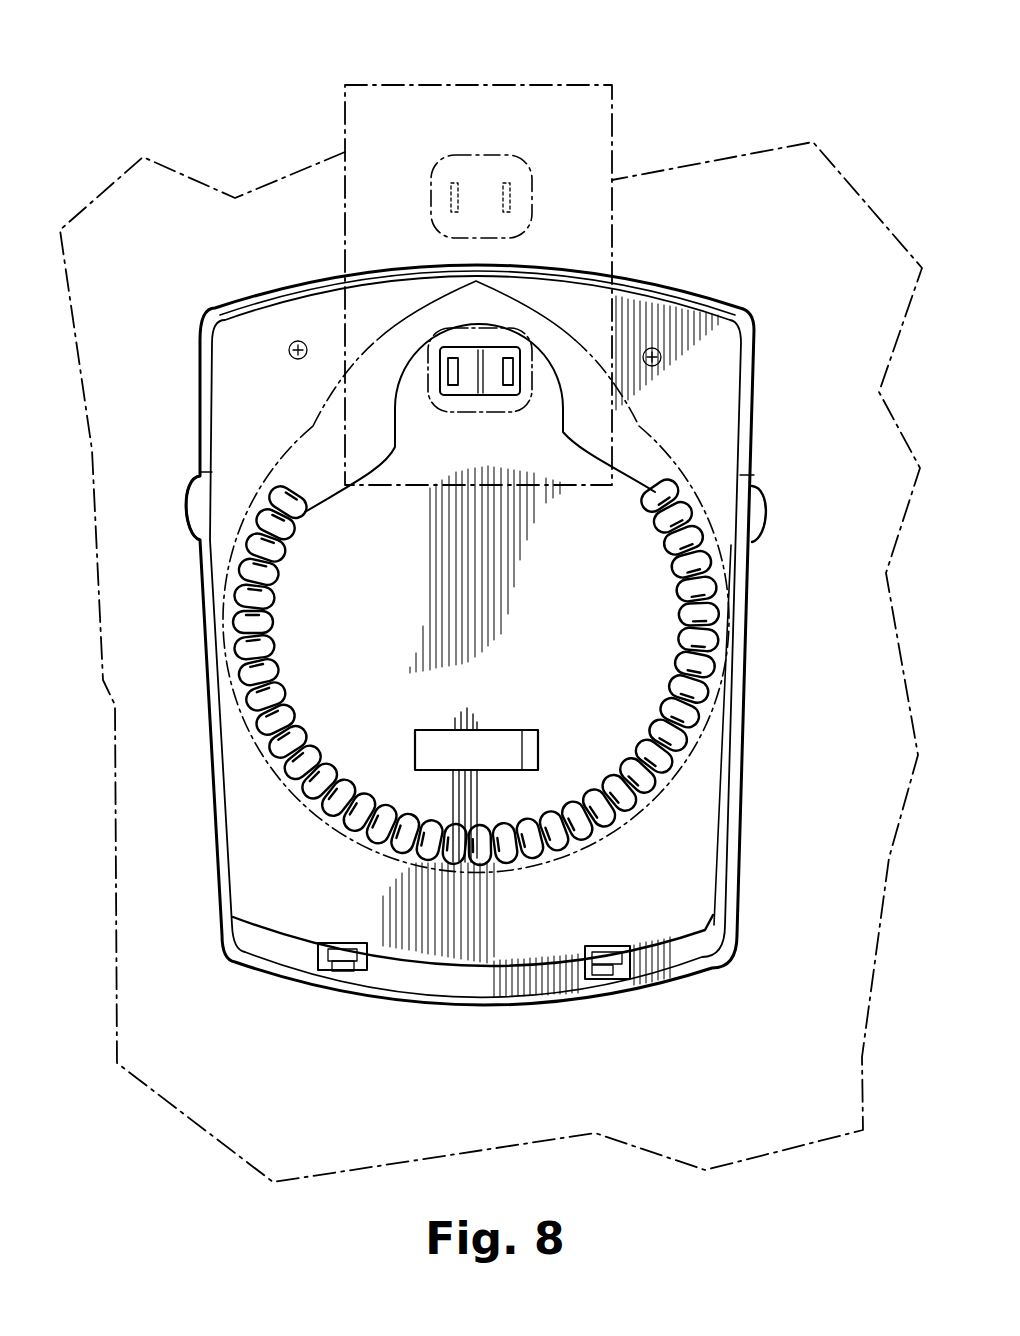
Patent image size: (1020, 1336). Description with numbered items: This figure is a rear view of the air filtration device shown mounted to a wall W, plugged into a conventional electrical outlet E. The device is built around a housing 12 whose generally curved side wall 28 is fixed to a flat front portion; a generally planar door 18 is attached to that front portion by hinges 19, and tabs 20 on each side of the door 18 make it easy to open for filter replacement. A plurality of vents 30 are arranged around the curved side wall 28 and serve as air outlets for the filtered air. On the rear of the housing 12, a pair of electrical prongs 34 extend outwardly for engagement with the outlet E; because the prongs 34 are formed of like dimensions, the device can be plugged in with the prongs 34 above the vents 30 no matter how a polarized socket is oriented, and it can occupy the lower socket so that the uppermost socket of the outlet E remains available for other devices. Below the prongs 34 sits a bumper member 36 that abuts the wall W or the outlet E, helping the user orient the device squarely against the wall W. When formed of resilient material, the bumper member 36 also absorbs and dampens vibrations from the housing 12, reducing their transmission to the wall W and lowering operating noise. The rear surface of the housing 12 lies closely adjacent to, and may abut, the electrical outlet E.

The wall W is at (118, 235).
The electrical outlet E is at (503, 113).
The housing 12 is at (253, 340).
The door 18 is at (693, 950).
The hinges 19 is at (341, 958).
The tabs 20 is at (195, 506).
The curved side wall 28 is at (317, 443).
The vents 30 is at (258, 720).
The electrical prongs 34 is at (512, 362).
The bumper member 36 is at (425, 748).